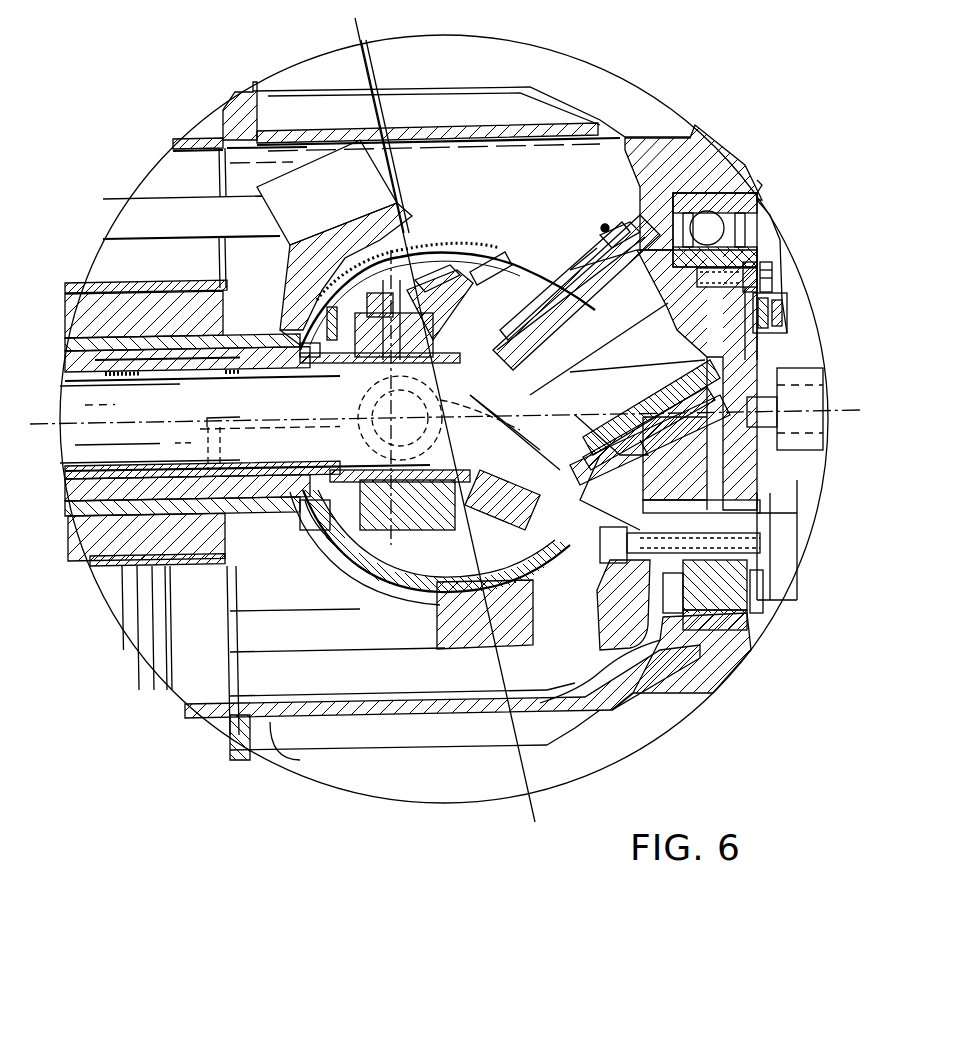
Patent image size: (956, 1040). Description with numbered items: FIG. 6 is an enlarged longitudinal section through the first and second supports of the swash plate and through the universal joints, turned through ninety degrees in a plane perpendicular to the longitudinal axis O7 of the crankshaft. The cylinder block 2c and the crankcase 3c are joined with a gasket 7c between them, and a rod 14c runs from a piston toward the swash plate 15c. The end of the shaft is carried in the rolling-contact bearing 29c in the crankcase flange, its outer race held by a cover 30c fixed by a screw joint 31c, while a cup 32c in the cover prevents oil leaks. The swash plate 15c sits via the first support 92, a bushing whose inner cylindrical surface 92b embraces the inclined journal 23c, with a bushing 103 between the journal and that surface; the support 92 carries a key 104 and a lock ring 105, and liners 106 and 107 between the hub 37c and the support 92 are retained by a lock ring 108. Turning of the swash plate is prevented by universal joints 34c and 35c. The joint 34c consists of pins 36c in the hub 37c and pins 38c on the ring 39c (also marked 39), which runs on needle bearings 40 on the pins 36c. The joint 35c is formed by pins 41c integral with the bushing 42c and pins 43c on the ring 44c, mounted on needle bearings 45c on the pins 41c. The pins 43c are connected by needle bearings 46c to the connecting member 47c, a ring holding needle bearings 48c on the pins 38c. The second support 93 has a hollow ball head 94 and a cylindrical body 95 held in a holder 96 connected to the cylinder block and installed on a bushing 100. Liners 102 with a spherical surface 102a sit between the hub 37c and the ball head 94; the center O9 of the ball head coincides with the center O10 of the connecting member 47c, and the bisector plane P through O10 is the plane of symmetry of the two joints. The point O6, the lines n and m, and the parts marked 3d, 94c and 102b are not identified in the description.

The cylinder block 2c is at (203, 128).
The gasket 7c is at (238, 96).
The rod 14c is at (192, 205).
The crankcase 3c is at (447, 130).
The housing wall 3d is at (705, 130).
The rolling-contact bearing 29c is at (745, 188).
The cover 30c is at (752, 201).
The screw joint 31c is at (770, 270).
The cup 32c is at (782, 312).
The hub of the swash plate 37c is at (500, 230).
The needle bearings 40 is at (436, 250).
The universal joint 34c is at (470, 250).
The liner 106 is at (520, 255).
The first support 92 is at (536, 240).
The swash plate 15c is at (570, 240).
The liner 107 is at (612, 225).
The lock ring 108 is at (610, 232).
The bushing 103 is at (612, 288).
The inclined journal 23c is at (596, 302).
The inner cylindrical surface 92b is at (558, 398).
The center point O6 is at (641, 354).
The pins 38c is at (510, 378).
The pins 36c is at (470, 360).
The pins 43c is at (355, 416).
The center of the outer spherical surface of the hollow ball head O9 is at (412, 418).
The key 104 is at (560, 370).
The lock ring 105 is at (612, 418).
The pins 41c is at (312, 306).
The needle bearings 46c is at (330, 432).
The bushing 42c is at (332, 380).
The bushing 100 is at (288, 445).
The needle bearings 48c is at (492, 434).
The ring 39c is at (540, 462).
The ring 39 is at (546, 470).
The geometrical center of the connecting member O10 is at (495, 502).
The spherical surface 102a is at (530, 545).
The cylindrical body 95 is at (66, 494).
The holder 96 is at (82, 560).
The needle bearings 45c is at (300, 520).
The second support 93 is at (300, 512).
The ring 44c is at (300, 548).
The universal joint 35c is at (316, 540).
The connecting member 47c is at (462, 530).
The hollow ball head 94 is at (500, 545).
The liners 102 is at (395, 598).
The housing 94c is at (518, 628).
The longitudinal axis of the crankshaft O7 is at (444, 401).
The bisector surface P is at (450, 416).
The line n is at (450, 295).
The line m is at (386, 416).
The output flange 102b is at (785, 409).